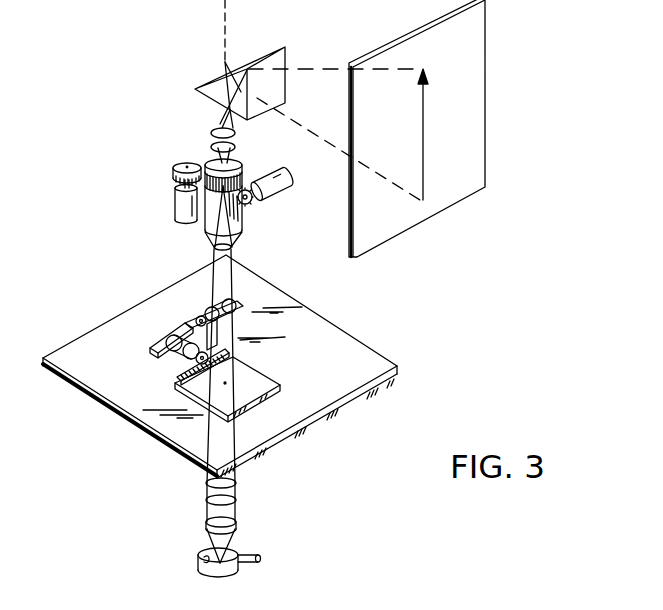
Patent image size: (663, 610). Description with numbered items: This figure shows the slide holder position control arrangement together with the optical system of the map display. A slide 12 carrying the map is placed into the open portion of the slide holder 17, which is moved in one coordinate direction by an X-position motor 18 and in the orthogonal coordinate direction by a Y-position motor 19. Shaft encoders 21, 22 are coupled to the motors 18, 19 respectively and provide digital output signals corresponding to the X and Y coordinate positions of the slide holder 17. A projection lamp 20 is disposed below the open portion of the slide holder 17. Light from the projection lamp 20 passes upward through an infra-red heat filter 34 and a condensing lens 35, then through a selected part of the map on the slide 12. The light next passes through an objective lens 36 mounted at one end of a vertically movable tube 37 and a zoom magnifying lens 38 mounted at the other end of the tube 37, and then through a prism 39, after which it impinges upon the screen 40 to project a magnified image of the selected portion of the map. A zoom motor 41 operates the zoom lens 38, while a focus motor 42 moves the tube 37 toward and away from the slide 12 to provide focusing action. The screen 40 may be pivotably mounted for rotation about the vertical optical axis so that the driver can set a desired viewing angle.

The slide 12 is at (260, 375).
The slide holder 17 is at (270, 393).
The X-position motor 18 is at (218, 313).
The Y-position motor 19 is at (177, 368).
The projection lamp 20 is at (238, 552).
The shaft encoder 21 is at (227, 303).
The shaft encoder 22 is at (163, 352).
The infra-red heat filter 34 is at (237, 523).
The condensing lens 35 is at (236, 483).
The objective lens 36 is at (237, 243).
The vertically movable tube 37 is at (240, 220).
The zoom magnifying lens 38 is at (217, 148).
The prism 39 is at (228, 63).
The screen 40 is at (480, 128).
The zoom motor 41 is at (173, 197).
The focus motor 42 is at (293, 176).